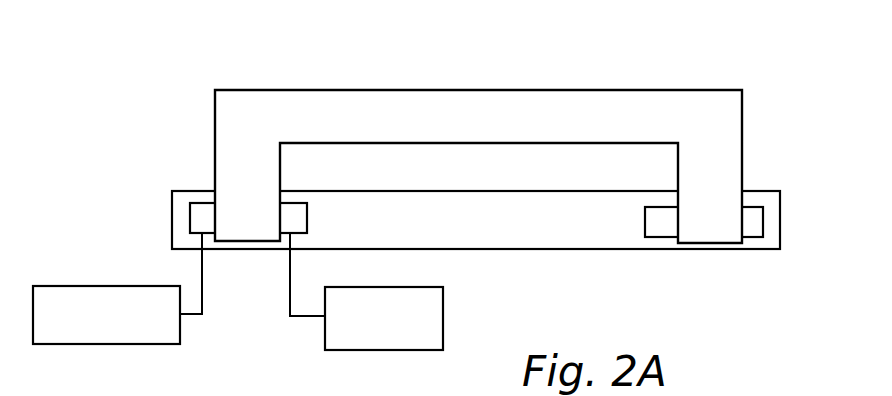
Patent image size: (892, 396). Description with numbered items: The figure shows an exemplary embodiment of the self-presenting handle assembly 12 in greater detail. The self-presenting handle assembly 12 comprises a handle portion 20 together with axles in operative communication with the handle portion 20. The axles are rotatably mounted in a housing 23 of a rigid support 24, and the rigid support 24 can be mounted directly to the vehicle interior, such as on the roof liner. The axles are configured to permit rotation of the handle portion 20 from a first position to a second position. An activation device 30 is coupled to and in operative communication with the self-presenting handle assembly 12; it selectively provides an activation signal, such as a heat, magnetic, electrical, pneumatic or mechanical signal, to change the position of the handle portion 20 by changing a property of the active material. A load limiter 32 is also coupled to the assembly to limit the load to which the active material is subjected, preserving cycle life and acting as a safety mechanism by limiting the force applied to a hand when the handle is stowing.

The self-presenting handle assembly 12 is at (128, 104).
The handle portion 20 is at (582, 100).
The housing 23 is at (180, 222).
The rigid support 24 is at (780, 222).
The activation device 30 is at (100, 286).
The load limiter 32 is at (386, 287).